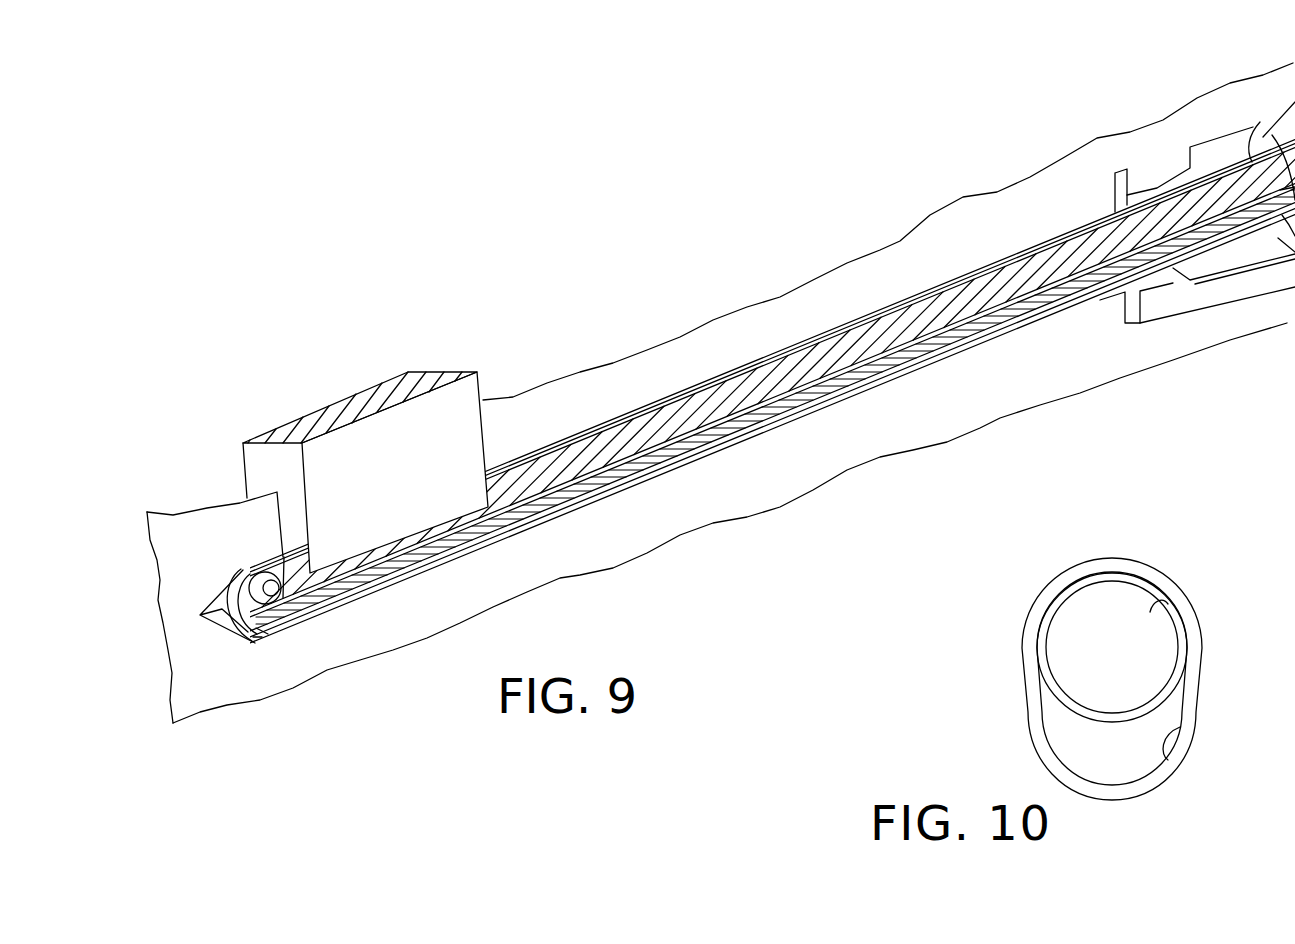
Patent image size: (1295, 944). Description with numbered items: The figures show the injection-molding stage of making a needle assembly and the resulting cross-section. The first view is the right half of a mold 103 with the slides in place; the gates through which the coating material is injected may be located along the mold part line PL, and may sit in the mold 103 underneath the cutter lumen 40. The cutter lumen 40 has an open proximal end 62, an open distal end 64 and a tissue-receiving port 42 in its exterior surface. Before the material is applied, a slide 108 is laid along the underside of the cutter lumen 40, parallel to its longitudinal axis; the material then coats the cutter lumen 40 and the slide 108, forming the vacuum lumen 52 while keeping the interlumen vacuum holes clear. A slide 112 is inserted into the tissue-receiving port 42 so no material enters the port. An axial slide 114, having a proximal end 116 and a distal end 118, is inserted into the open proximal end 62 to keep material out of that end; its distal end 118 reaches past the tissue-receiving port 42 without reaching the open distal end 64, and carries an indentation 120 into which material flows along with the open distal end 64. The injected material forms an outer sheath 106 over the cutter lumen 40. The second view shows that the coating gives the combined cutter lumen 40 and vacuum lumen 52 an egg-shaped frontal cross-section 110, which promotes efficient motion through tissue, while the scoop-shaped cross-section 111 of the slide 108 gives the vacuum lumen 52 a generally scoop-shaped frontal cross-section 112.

In FIG. 9, the mold 103 is at (967, 220).
In FIG. 9, the mold part line PL is at (827, 300).
In FIG. 9, the slide 108 is at (553, 508).
In FIG. 9, the axial slide 114 is at (637, 443).
In FIG. 9, the slide 112 is at (493, 383).
In FIG. 10, the slide 112 is at (1070, 738).
In FIG. 9, the distal end 118 is at (247, 637).
In FIG. 9, the indentation 120 is at (241, 569).
In FIG. 9, the open distal end 64 is at (240, 598).
In FIG. 9, the tissue-receiving port 42 is at (275, 558).
In FIG. 9, the scoop-shaped cross-section 111 is at (257, 643).
In FIG. 9, the open proximal end 62 is at (1253, 126).
In FIG. 9, the proximal end 116 is at (1293, 147).
In FIG. 10, the egg-shaped frontal cross-section 110 is at (1027, 692).
In FIG. 10, the outer sheath 106 is at (1067, 568).
In FIG. 10, the cutter lumen 40 is at (1150, 612).
In FIG. 10, the vacuum lumen 52 is at (1180, 728).